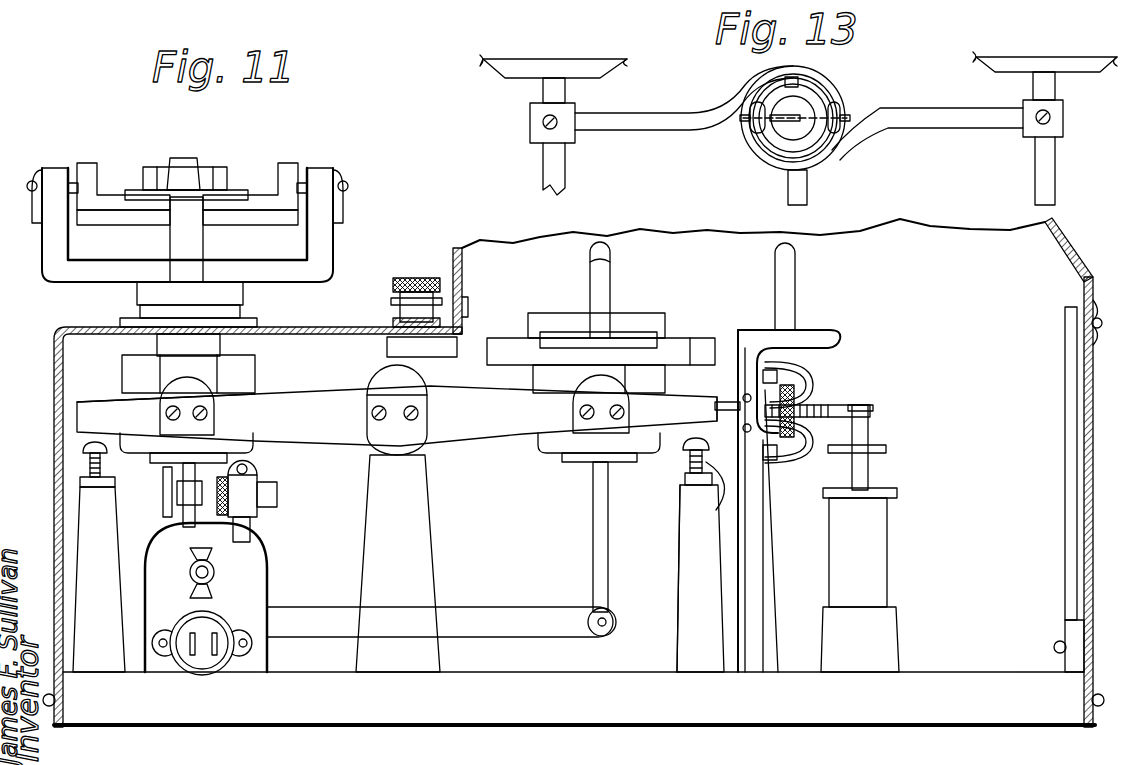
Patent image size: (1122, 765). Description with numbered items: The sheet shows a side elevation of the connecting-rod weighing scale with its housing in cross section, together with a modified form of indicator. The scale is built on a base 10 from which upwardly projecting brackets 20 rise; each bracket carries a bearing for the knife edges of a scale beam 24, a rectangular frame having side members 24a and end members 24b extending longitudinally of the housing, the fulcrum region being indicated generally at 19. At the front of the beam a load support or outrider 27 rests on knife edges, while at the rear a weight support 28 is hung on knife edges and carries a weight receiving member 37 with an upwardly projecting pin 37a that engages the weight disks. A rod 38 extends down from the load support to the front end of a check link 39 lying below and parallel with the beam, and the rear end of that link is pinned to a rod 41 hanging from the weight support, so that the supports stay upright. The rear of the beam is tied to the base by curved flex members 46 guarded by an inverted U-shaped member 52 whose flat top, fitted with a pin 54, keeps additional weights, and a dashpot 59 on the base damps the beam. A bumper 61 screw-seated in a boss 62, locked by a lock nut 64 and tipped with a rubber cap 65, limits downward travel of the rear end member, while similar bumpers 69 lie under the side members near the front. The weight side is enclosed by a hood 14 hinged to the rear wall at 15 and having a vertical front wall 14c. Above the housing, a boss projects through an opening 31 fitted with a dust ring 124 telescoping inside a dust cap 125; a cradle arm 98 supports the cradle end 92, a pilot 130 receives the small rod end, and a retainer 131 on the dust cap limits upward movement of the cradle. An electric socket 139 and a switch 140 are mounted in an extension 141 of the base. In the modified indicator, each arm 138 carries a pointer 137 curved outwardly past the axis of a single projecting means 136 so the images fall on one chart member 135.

In FIG. 11, the base 10 is at (573, 692).
In FIG. 11, the hood 14 is at (1075, 262).
In FIG. 11, the front wall of the hood 14c is at (465, 270).
In FIG. 11, the hinged connection 15 is at (1100, 318).
In FIG. 11, the lever pivot 19 is at (324, 382).
In FIG. 11, the bracket 20 is at (415, 555).
In FIG. 11, the scale beam 24 is at (431, 395).
In FIG. 11, the side member of the scale beam 24a is at (88, 412).
In FIG. 11, the end member of the scale beam 24b is at (70, 413).
In FIG. 11, the load support 27 is at (238, 380).
In FIG. 13, the load support 27 is at (798, 50).
In FIG. 11, the weight support 28 is at (655, 383).
In FIG. 11, the opening 31 is at (222, 336).
In FIG. 11, the weight receiving member 37 is at (668, 352).
In FIG. 11, the pin 37a is at (606, 250).
In FIG. 11, the rod 38 is at (185, 517).
In FIG. 13, the rod 38 is at (542, 172).
In FIG. 11, the check link 39 is at (508, 628).
In FIG. 11, the rod 41 is at (596, 545).
In FIG. 11, the flex member 46 is at (815, 372).
In FIG. 11, the inverted U-shaped member 52 is at (835, 340).
In FIG. 11, the pin 54 is at (795, 270).
In FIG. 11, the dashpot 59 is at (877, 558).
In FIG. 11, the bumper 61 is at (700, 578).
In FIG. 11, the boss 62 is at (684, 576).
In FIG. 11, the lock nut 64 is at (680, 490).
In FIG. 11, the rubber cap 65 is at (709, 461).
In FIG. 11, the bumper 69 is at (88, 465).
In FIG. 11, the cradle end 92 is at (152, 170).
In FIG. 11, the cradle arm 98 is at (55, 266).
In FIG. 11, the dust ring 124 is at (148, 312).
In FIG. 11, the dust cap 125 is at (243, 290).
In FIG. 11, the pilot 130 is at (192, 162).
In FIG. 11, the retainer 131 is at (195, 244).
In FIG. 11, the chart member 135 is at (1064, 375).
In FIG. 11, the projecting means 136 is at (255, 480).
In FIG. 13, the projecting means 136 is at (802, 108).
In FIG. 13, the pointer 137 is at (765, 130).
In FIG. 11, the arm 138 is at (180, 494).
In FIG. 13, the arm 138 is at (662, 115).
In FIG. 11, the electric socket 139 is at (188, 660).
In FIG. 11, the switch 140 is at (215, 566).
In FIG. 11, the extension 141 is at (255, 588).